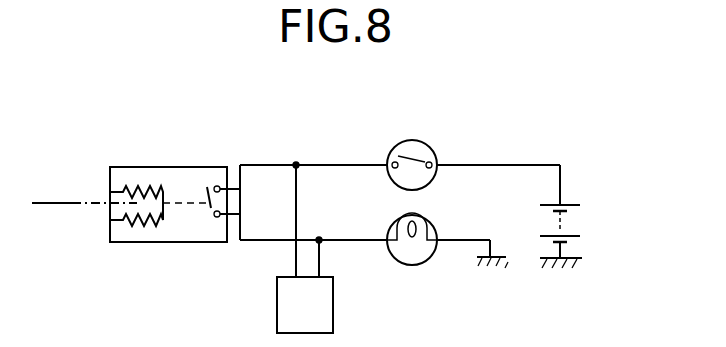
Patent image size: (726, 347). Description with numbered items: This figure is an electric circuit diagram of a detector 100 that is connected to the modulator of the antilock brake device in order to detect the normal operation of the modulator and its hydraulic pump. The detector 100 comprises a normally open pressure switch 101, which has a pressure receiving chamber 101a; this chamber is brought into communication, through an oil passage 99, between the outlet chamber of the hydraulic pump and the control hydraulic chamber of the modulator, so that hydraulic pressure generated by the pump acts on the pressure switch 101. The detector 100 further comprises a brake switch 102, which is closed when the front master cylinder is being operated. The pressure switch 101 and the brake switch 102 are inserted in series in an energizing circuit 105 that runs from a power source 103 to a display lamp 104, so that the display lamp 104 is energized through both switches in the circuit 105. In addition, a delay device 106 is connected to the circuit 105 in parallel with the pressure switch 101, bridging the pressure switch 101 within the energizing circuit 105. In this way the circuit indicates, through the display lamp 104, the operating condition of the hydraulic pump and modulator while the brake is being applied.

The oil passage 99 is at (61, 203).
The detector 100 is at (549, 154).
The pressure switch 101 is at (158, 167).
The pressure receiving chamber 101a is at (137, 210).
The brake switch 102 is at (412, 140).
The power source 103 is at (570, 204).
The display lamp 104 is at (412, 265).
The energizing circuit 105 is at (470, 165).
The delay device 106 is at (317, 318).